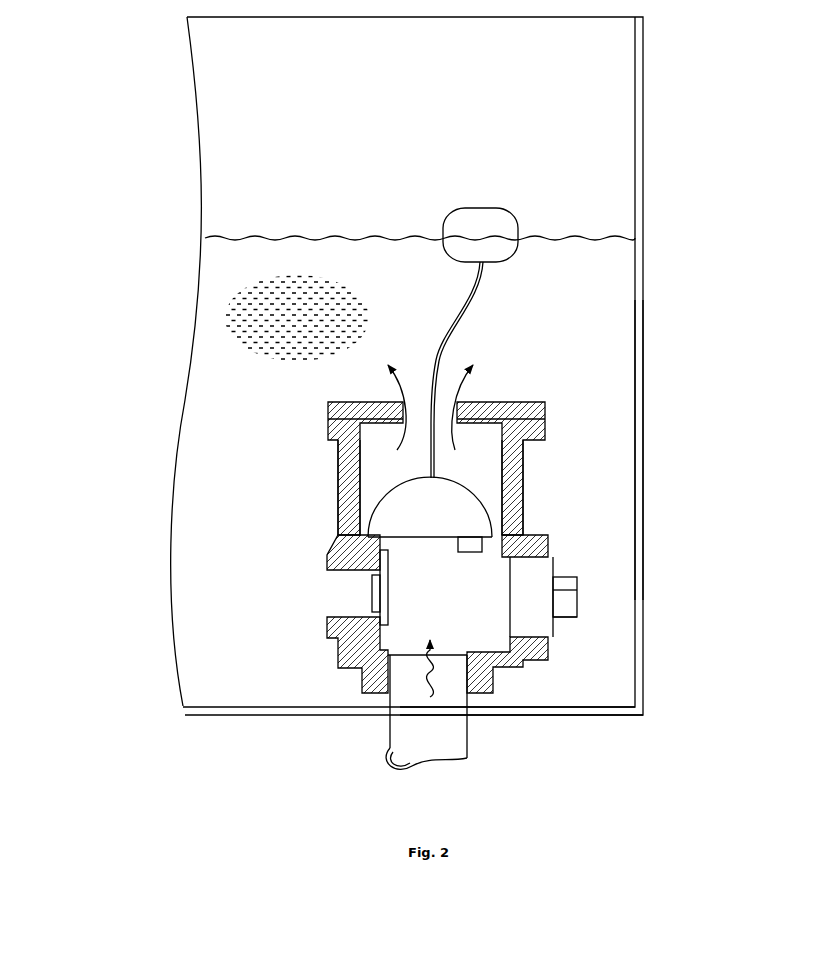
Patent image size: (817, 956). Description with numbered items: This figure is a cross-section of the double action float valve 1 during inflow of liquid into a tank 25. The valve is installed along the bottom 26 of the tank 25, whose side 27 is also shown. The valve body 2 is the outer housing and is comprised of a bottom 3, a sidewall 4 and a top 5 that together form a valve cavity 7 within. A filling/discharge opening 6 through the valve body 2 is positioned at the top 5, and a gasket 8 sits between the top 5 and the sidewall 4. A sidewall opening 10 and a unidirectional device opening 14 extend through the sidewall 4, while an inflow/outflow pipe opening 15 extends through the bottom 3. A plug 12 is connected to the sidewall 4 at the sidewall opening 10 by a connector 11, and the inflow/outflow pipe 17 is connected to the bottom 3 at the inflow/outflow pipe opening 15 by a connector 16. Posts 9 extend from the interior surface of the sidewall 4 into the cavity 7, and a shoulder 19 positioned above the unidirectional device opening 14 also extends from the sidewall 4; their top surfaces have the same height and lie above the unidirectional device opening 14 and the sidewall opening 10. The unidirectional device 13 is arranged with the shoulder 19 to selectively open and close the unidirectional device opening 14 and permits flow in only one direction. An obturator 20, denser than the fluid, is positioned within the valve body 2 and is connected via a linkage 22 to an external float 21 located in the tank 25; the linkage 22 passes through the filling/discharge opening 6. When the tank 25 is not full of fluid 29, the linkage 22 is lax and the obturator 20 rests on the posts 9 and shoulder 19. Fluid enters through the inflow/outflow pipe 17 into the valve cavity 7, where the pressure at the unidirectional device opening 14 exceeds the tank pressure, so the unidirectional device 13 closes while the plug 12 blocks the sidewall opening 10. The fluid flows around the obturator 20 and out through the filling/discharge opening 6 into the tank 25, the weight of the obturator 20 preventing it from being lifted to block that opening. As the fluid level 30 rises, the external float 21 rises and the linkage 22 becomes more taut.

The double action float valve 1 is at (337, 348).
The valve body 2 is at (340, 495).
The bottom 3 is at (372, 680).
The sidewall 4 is at (524, 455).
The top 5 is at (352, 398).
The filling/discharge opening 6 is at (440, 411).
The valve cavity 7 is at (470, 583).
The gasket 8 is at (360, 420).
The posts 9 is at (550, 540).
The sidewall opening 10 is at (512, 607).
The connector 11 is at (553, 558).
The plug 12 is at (550, 617).
The unidirectional device 13 is at (380, 580).
The unidirectional device opening 14 is at (356, 598).
The inflow/outflow pipe opening 15 is at (415, 682).
The connector 16 is at (467, 677).
The inflow/outflow pipe 17 is at (467, 745).
The shoulder 19 is at (368, 540).
The obturator 20 is at (395, 486).
The external float 21 is at (518, 232).
The linkage 22 is at (445, 330).
The tank 25 is at (645, 471).
The bottom of the tank 26 is at (610, 715).
The side of the tank 27 is at (643, 141).
The fluid 29 is at (520, 285).
The fluid level 30 is at (262, 235).